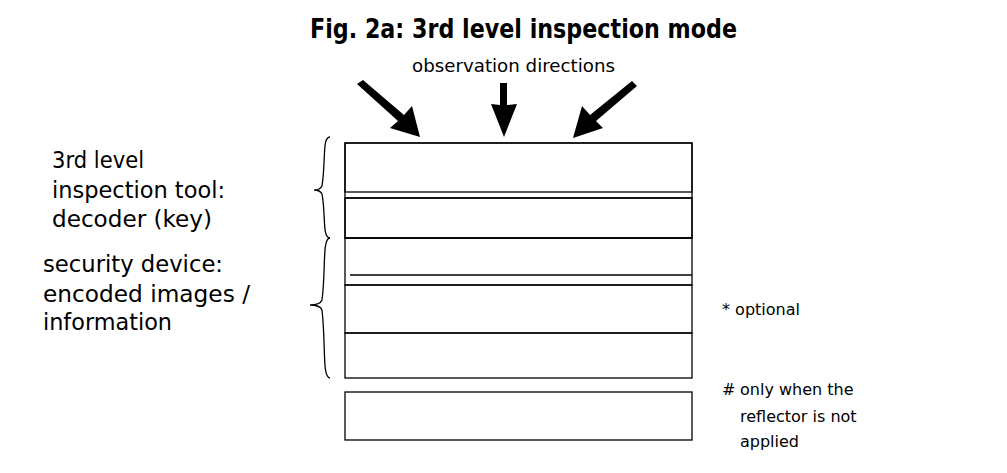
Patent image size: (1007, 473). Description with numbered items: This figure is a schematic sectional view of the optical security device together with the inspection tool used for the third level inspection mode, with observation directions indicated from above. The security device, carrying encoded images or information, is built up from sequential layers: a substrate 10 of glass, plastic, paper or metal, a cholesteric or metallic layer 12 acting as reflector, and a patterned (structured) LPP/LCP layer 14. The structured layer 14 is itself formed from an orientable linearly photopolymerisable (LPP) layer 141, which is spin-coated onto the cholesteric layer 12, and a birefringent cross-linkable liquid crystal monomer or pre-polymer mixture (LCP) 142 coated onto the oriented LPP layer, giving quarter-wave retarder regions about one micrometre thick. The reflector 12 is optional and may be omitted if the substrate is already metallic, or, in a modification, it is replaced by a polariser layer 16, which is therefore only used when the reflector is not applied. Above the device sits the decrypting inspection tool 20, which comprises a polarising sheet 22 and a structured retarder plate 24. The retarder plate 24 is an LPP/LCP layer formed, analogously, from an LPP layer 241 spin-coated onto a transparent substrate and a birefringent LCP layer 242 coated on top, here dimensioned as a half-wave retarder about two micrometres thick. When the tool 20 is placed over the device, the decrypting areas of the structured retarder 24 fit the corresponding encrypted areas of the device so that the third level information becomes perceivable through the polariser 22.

The substrate 10 is at (380, 360).
The reflector layer 12 is at (380, 317).
The patterned LPP/LCP layer 14 is at (378, 257).
The orientable linearly photopolymerisable (LPP) layer 141 is at (680, 276).
The cross-linkable liquid crystal monomer or pre-polymer mixture (LCP) layer 142 is at (678, 257).
The polariser layer 16 is at (380, 415).
The decrypting inspection tool 20 is at (745, 196).
The polarising sheet 22 is at (680, 170).
The structured retarder plate 24 is at (670, 215).
The orientable linearly photopolymerisable (LPP) layer 241 is at (678, 193).
The cross-linkable liquid crystal monomer or pre-polymer mixture (LCP) layer 242 is at (683, 208).